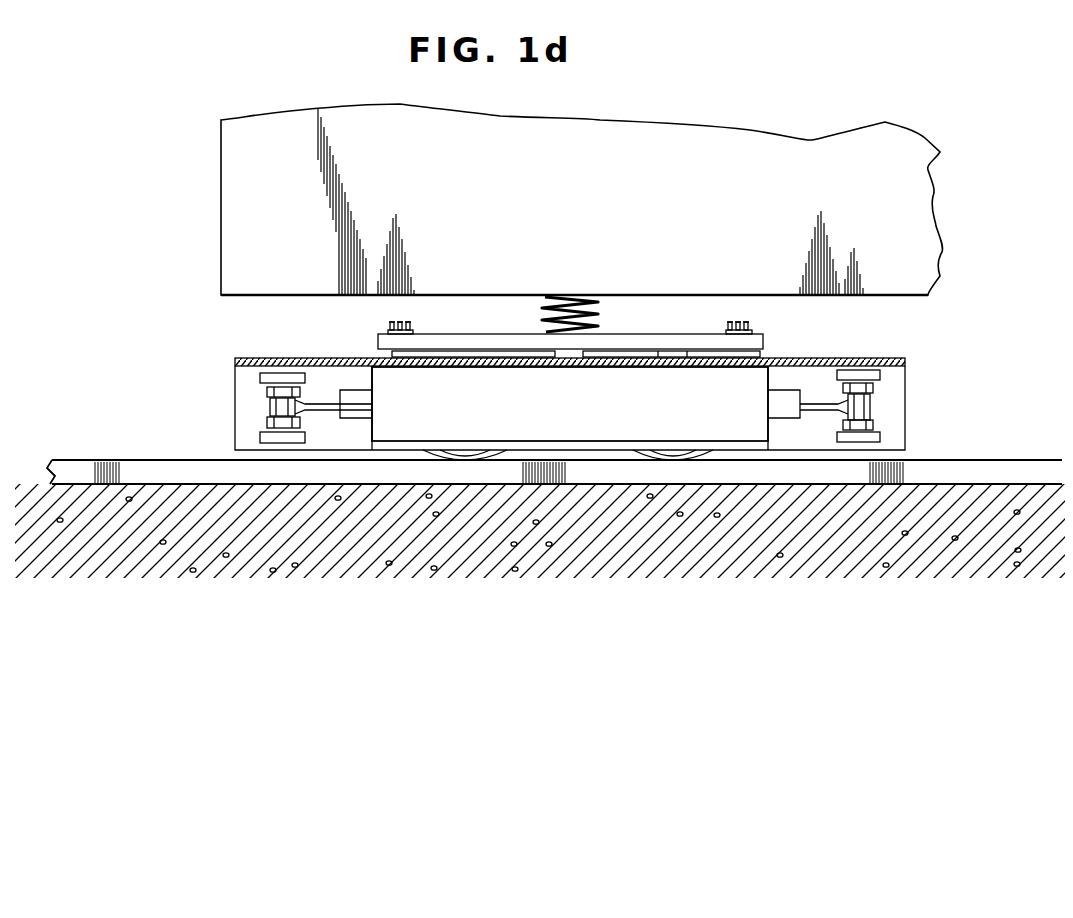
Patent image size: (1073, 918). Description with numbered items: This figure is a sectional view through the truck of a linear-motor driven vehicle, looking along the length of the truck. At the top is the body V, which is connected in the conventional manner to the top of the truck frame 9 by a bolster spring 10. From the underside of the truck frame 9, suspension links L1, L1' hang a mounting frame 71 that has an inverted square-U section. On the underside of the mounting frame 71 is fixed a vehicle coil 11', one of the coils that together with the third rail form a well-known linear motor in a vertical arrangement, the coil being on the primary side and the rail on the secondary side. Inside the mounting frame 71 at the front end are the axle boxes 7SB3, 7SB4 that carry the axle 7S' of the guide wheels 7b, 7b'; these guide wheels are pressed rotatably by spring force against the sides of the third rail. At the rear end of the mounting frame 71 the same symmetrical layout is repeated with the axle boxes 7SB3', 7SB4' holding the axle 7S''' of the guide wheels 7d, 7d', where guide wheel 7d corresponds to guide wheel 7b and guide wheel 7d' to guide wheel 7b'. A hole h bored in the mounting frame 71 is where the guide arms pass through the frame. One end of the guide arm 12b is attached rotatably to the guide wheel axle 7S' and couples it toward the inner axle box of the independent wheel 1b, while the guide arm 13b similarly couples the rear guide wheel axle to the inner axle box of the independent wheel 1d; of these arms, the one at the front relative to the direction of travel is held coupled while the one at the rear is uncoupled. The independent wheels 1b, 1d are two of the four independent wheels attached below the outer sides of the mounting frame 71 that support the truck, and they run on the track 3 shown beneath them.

The body V is at (915, 216).
The bolster spring 10 is at (546, 301).
The truck frame 9 is at (645, 343).
The suspension link L1 is at (374, 332).
The suspension link L1' is at (765, 331).
The mounting frame 71 is at (862, 360).
The vehicle coil 11' is at (570, 442).
The axle box 7SB3 is at (271, 358).
The guide wheel 7b is at (242, 380).
The axle 7S' is at (300, 359).
The guide wheel 7b' is at (245, 416).
The axle box 7SB4 is at (232, 446).
The hole h is at (357, 395).
The axle box 7SB3' is at (909, 358).
The guide wheel 7d is at (899, 404).
The axle 7S''' is at (848, 359).
The guide wheel 7d' is at (910, 435).
The axle box 7SB4' is at (906, 479).
The guide arm 12b is at (330, 412).
The guide arm 13b is at (820, 407).
The independent wheel 1b is at (507, 455).
The independent wheel 1d is at (713, 455).
The rail 3 is at (283, 470).